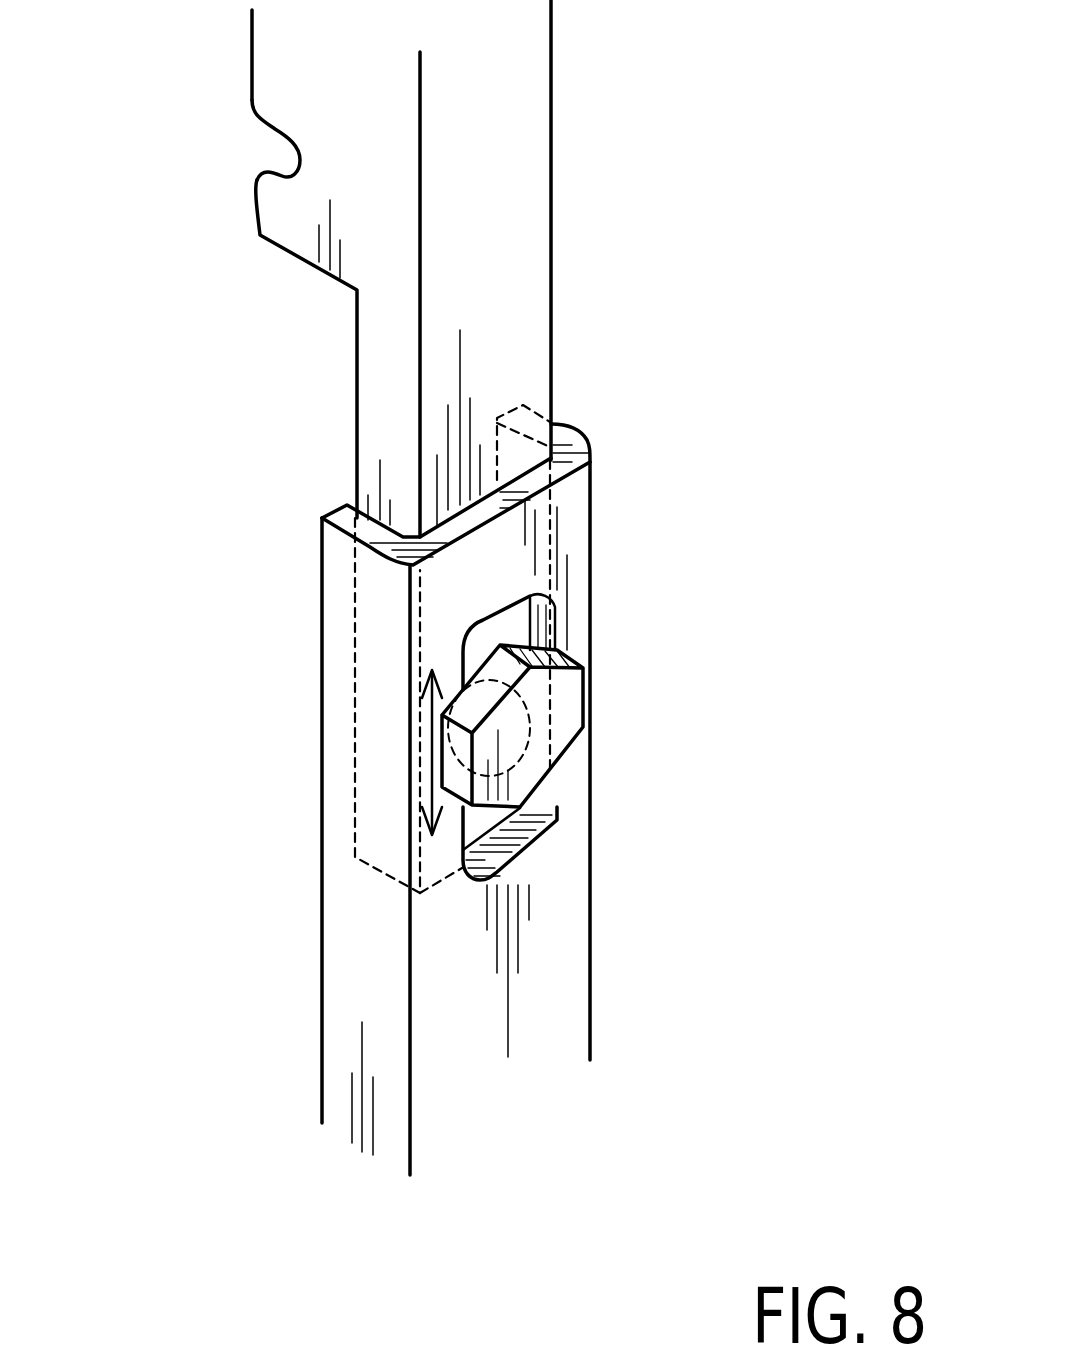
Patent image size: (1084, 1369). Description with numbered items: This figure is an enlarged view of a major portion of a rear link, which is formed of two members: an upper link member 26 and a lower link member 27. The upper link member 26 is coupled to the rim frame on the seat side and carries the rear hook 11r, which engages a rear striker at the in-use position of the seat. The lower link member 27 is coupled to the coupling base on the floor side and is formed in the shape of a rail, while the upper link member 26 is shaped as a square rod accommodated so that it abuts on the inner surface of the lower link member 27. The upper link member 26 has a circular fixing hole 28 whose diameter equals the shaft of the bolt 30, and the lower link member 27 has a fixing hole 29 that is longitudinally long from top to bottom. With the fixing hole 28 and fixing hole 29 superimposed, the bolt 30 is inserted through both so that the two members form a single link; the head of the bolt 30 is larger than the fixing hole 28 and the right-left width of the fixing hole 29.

The rear hook 11r is at (292, 166).
The upper link member 26 is at (512, 230).
The lower link member 27 is at (493, 977).
The fixing hole 28 is at (515, 727).
The fixing hole 29 is at (555, 803).
The bolt 30 is at (540, 740).